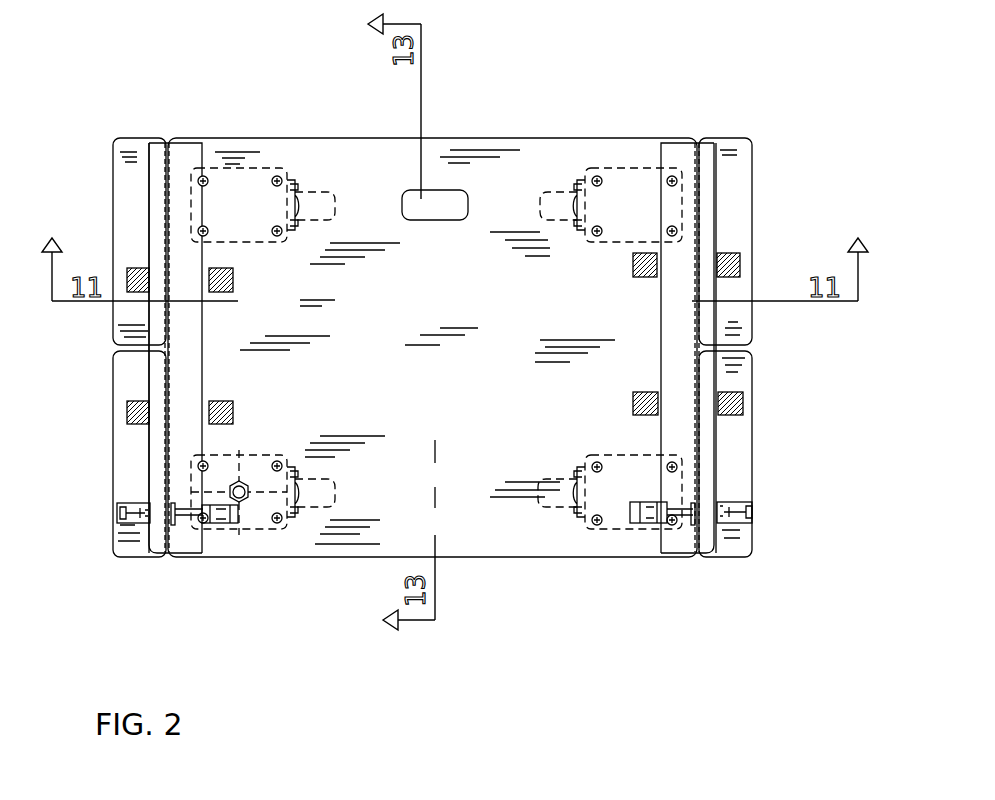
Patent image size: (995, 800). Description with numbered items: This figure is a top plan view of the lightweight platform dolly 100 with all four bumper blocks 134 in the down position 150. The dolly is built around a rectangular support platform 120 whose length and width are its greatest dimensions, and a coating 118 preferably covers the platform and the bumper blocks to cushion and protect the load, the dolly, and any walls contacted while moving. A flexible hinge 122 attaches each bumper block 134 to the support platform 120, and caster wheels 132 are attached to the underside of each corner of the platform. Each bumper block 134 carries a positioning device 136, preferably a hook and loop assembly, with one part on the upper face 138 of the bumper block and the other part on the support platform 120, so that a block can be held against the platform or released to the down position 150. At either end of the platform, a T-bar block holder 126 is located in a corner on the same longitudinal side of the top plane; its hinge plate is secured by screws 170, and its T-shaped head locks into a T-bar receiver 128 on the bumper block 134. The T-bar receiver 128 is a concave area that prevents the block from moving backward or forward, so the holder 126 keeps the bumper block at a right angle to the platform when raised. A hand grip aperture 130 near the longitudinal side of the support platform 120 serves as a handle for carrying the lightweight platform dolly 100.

The lightweight platform dolly 100 is at (300, 95).
The coating 118 is at (537, 449).
The support platform 120 is at (387, 137).
The flexible hinge 122 is at (158, 193).
The T-bar block holder 126 is at (208, 522).
The T-bar receiver 128 is at (133, 510).
The hand grip aperture 130 is at (467, 194).
The caster wheels 132 is at (617, 167).
The bumper blocks 134 is at (147, 138).
The positioning device 136 is at (213, 293).
The upper face 138 is at (125, 168).
The down position 150 is at (131, 125).
The screws 170 is at (277, 181).